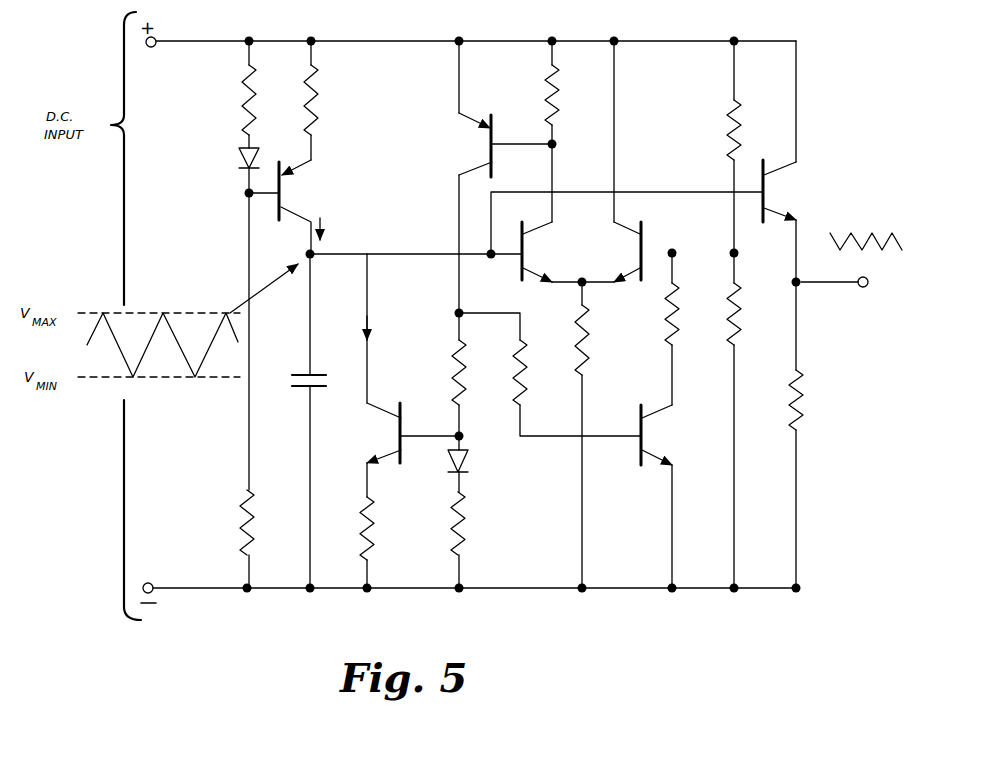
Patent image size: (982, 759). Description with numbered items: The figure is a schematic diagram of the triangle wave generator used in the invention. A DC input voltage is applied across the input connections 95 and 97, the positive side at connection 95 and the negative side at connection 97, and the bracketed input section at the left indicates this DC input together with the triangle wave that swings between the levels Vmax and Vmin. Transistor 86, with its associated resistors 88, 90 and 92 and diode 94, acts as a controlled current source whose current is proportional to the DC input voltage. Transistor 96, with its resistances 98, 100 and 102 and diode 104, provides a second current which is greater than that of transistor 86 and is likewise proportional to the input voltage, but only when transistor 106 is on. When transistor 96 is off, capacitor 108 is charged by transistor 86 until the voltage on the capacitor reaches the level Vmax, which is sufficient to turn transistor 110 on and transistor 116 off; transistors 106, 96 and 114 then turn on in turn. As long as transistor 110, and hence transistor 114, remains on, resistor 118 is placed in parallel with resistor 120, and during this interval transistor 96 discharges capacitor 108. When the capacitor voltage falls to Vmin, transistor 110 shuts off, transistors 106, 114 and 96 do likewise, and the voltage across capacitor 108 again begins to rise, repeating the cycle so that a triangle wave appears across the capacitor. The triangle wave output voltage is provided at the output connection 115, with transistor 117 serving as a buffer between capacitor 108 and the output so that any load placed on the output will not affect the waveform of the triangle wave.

The transistor 86 is at (290, 186).
The resistor 88 is at (232, 516).
The resistor 90 is at (243, 99).
The resistor 92 is at (317, 95).
The diode 94 is at (240, 158).
The connection 95 is at (156, 36).
The transistor 96 is at (388, 429).
The negative DC input terminal 97 is at (150, 582).
The resistance 98 is at (452, 362).
The resistance 100 is at (372, 512).
The resistance 102 is at (466, 510).
The diode 104 is at (466, 462).
The transistor 106 is at (480, 141).
The capacitor 108 is at (314, 380).
The transistor 110 is at (532, 256).
The transistor 114 is at (652, 437).
The output connection 115 is at (863, 288).
The transistor 116 is at (630, 252).
The transistor 117 is at (778, 190).
The resistor 118 is at (664, 305).
The resistor 120 is at (742, 318).